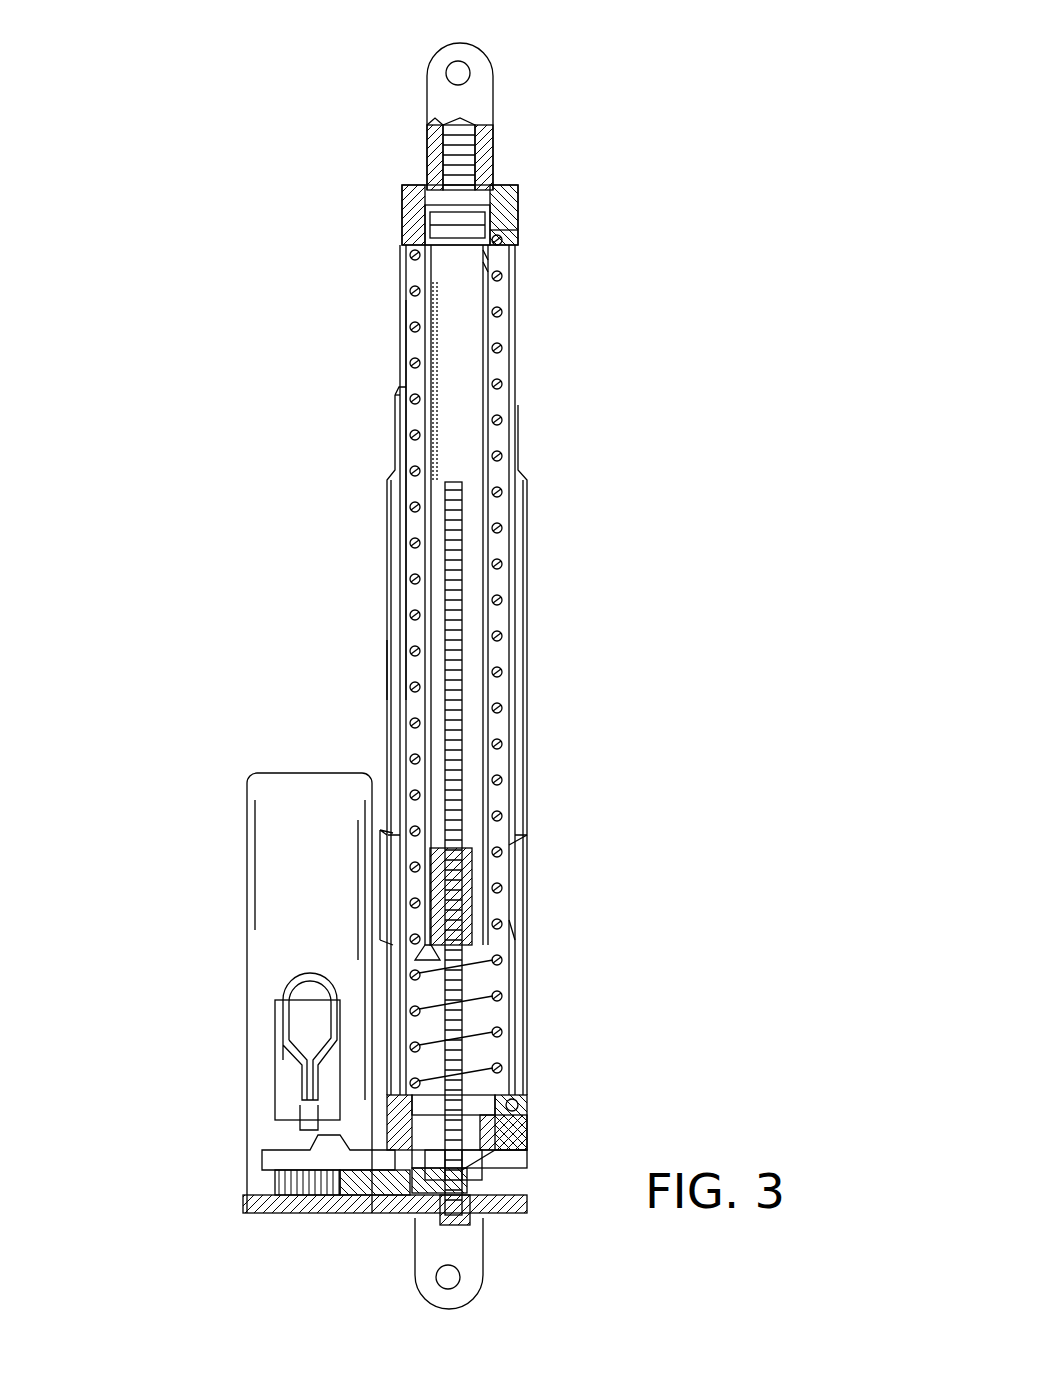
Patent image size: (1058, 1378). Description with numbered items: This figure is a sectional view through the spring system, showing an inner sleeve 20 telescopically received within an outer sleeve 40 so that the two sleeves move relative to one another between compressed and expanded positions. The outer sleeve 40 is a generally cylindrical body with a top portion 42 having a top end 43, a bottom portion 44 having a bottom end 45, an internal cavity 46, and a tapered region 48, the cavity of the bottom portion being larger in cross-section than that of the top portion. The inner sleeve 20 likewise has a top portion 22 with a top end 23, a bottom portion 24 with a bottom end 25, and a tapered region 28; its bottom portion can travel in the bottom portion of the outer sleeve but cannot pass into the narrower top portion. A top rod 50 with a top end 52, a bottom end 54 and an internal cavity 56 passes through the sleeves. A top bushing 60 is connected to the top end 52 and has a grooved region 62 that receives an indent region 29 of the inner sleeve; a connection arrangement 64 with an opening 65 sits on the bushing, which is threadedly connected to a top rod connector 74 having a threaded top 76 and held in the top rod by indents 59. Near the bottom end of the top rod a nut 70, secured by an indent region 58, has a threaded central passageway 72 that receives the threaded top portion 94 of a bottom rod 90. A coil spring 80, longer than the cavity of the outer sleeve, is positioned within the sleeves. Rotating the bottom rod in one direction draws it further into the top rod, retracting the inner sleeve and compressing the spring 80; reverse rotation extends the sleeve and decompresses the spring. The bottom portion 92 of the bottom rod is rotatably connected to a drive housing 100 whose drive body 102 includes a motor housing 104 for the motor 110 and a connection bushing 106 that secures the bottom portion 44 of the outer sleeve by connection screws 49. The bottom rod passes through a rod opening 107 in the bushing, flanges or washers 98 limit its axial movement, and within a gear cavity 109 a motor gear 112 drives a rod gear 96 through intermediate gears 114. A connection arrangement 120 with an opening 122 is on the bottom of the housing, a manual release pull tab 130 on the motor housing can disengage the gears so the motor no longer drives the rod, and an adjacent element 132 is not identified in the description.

The inner sleeve 20 is at (536, 378).
The top portion 22 is at (426, 250).
The top end 23 is at (415, 215).
The bottom portion 24 is at (520, 875).
The bottom end 25 is at (520, 935).
The tapered region 28 is at (522, 830).
The indent region 29 is at (515, 232).
The outer sleeve 40 is at (541, 604).
The top portion 42 is at (516, 420).
The top end 43 is at (398, 388).
The bottom portion 44 is at (522, 1065).
The bottom end 45 is at (505, 1135).
The internal cavity 46 is at (398, 640).
The tapered region 48 is at (395, 470).
The connection screws 49 is at (516, 1108).
The top rod 50 is at (510, 332).
The top end 52 is at (495, 190).
The bottom end 54 is at (470, 962).
The internal cavity 56 is at (445, 420).
The indent region 58 is at (430, 948).
The indents 59 is at (490, 255).
The top bushing 60 is at (505, 195).
The grooved region 62 is at (408, 230).
The connection arrangement 64 is at (478, 135).
The opening 65 is at (447, 75).
The nut 70 is at (472, 895).
The threaded central passageway 72 is at (450, 865).
The top rod connector 74 is at (425, 195).
The threaded top 76 is at (440, 130).
The coil spring 80 is at (404, 352).
The bottom rod 90 is at (432, 571).
The bottom portion 92 is at (475, 1220).
The top portion 94 is at (458, 490).
The rod gear 96 is at (470, 1182).
The flanges or washers 98 is at (470, 1185).
The drive housing 100 is at (292, 765).
The drive body 102 is at (270, 1170).
The motor housing 104 is at (262, 855).
The connection bushing 106 is at (500, 1152).
The rod opening 107 is at (480, 1110).
The gear cavity 109 is at (470, 1162).
The motor 110 is at (290, 1155).
The motor gear 112 is at (287, 1196).
The intermediate gears 114 is at (340, 1198).
The connection arrangement 120 is at (430, 1250).
The opening 122 is at (452, 1280).
The manual release pull tab 130 is at (282, 990).
The lever pin 132 is at (298, 1112).